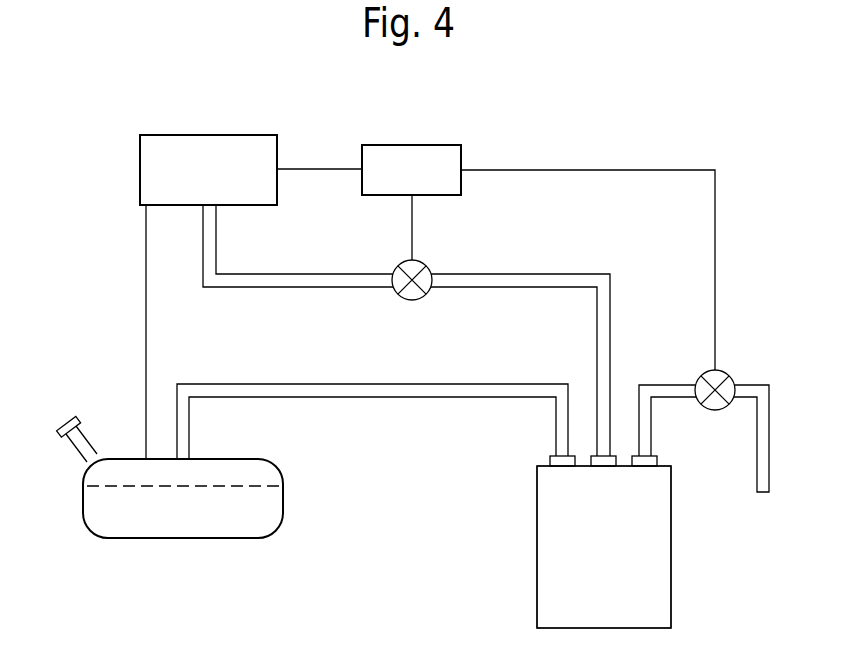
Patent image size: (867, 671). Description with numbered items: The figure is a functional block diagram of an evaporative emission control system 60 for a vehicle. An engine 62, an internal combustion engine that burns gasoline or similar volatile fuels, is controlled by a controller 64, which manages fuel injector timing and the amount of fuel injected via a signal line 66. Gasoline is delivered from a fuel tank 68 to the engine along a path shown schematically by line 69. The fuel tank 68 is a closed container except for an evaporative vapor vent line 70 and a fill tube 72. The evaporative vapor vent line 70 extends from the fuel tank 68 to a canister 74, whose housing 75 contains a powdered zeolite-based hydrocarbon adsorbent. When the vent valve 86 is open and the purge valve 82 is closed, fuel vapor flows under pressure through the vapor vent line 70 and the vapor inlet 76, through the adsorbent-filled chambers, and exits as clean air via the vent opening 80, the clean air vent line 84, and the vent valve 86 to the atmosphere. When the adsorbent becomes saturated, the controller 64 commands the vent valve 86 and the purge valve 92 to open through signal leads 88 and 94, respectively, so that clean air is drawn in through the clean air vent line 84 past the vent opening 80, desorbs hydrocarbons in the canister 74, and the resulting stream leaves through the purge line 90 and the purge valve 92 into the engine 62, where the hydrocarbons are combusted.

The evaporative emission control system 60 is at (103, 128).
The engine 62 is at (206, 135).
The controller 64 is at (432, 145).
The signal line 66 is at (318, 169).
The fuel tank 68 is at (282, 532).
The line 69 is at (146, 310).
The evaporative vapor vent line 70 is at (358, 398).
The fill tube 72 is at (74, 443).
The canister 74 is at (708, 543).
The housing 75 is at (537, 562).
The vapor inlet 76 is at (548, 457).
The vent opening 80 is at (658, 457).
The purge valve 82 is at (615, 455).
The clean air vent line 84 is at (769, 427).
The vent valve 86 is at (723, 373).
The signal lead 88 is at (580, 171).
The purge line 90 is at (526, 274).
The purge valve 92 is at (410, 300).
The signal lead 94 is at (412, 220).